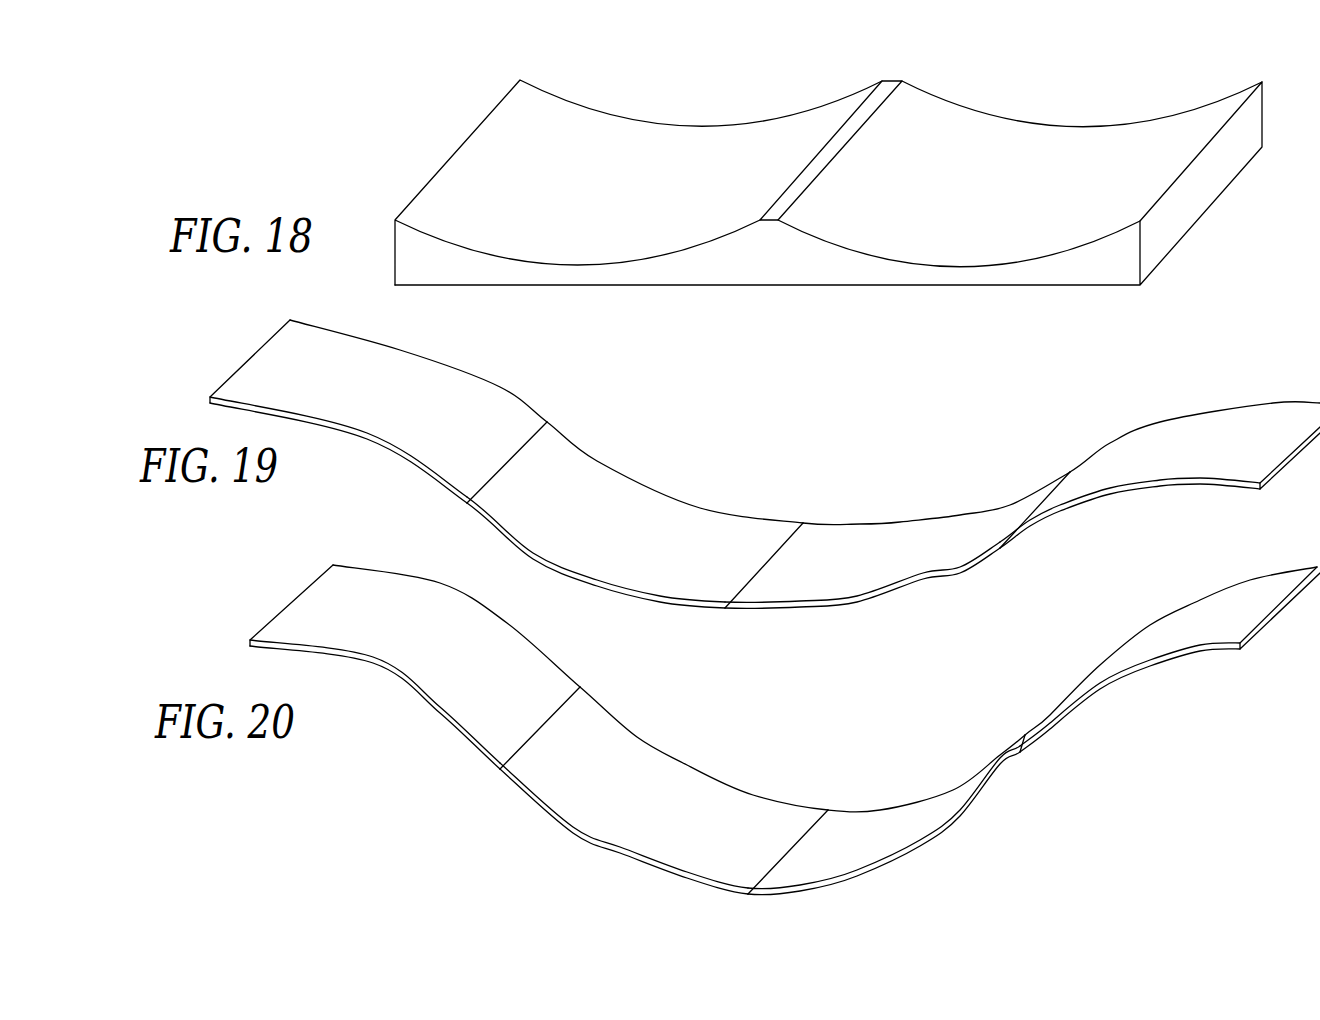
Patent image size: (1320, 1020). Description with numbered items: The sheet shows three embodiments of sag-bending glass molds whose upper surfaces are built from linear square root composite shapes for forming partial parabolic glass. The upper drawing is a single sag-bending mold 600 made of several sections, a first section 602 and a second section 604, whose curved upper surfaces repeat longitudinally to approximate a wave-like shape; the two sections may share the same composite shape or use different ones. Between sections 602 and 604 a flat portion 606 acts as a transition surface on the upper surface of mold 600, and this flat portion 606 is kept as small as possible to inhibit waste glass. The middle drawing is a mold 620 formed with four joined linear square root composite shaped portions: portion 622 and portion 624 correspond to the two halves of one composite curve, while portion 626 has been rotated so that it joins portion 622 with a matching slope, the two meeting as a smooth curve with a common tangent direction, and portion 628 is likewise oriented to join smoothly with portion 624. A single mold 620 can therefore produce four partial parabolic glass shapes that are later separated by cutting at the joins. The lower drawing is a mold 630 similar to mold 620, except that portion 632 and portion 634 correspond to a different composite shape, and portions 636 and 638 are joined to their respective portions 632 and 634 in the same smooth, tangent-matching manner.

In FIG. 18, the sag-bending mold 600 is at (386, 101).
In FIG. 18, the first section 602 is at (688, 110).
In FIG. 18, the second section 604 is at (1080, 108).
In FIG. 18, the flat portion 606 is at (888, 88).
In FIG. 19, the mold 620 is at (619, 388).
In FIG. 19, the portion 622 is at (877, 542).
In FIG. 19, the portion 624 is at (657, 510).
In FIG. 19, the portion 626 is at (1222, 425).
In FIG. 19, the portion 628 is at (372, 353).
In FIG. 20, the mold 630 is at (822, 703).
In FIG. 20, the portion 632 is at (890, 812).
In FIG. 20, the portion 634 is at (640, 760).
In FIG. 20, the portion 636 is at (1233, 614).
In FIG. 20, the portion 638 is at (365, 585).